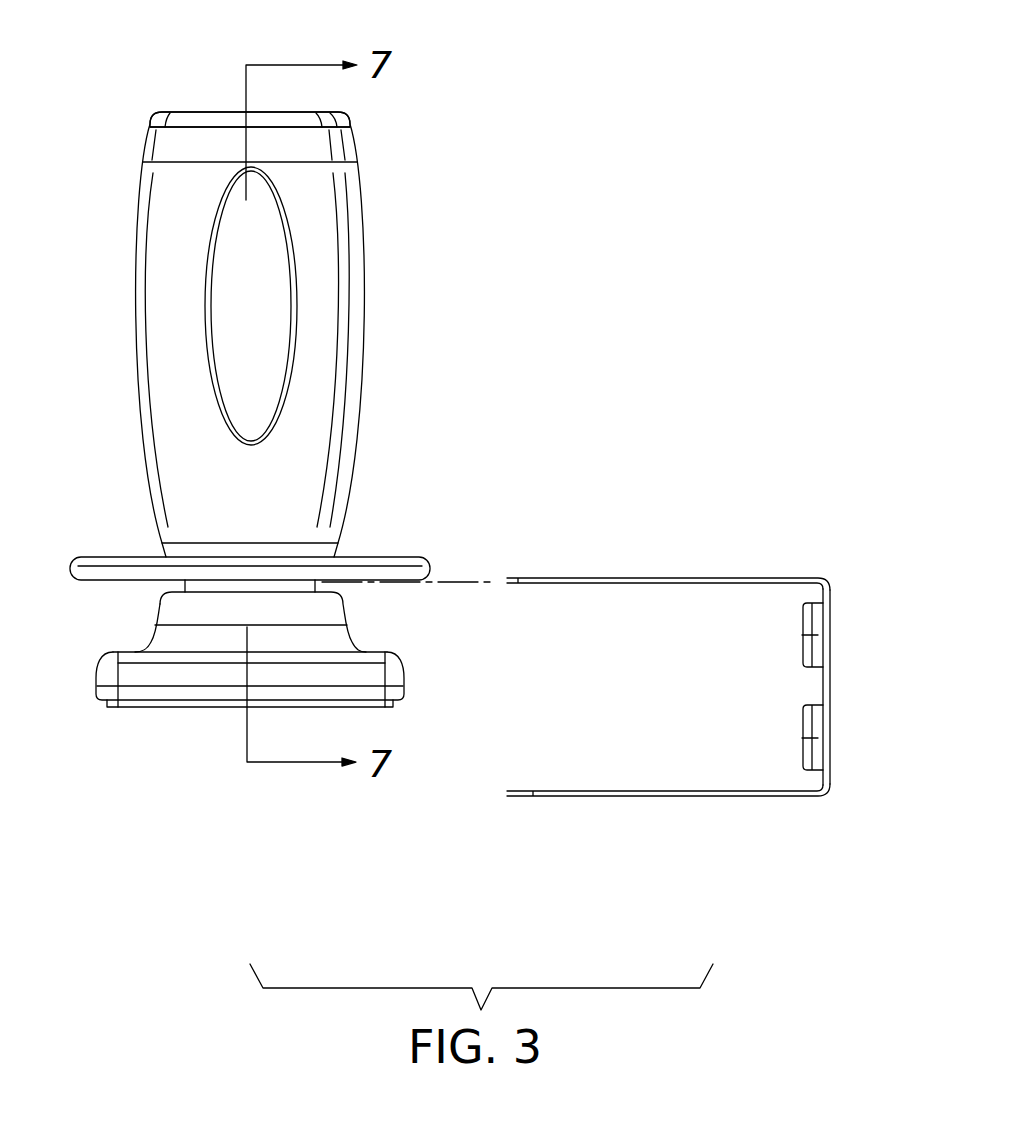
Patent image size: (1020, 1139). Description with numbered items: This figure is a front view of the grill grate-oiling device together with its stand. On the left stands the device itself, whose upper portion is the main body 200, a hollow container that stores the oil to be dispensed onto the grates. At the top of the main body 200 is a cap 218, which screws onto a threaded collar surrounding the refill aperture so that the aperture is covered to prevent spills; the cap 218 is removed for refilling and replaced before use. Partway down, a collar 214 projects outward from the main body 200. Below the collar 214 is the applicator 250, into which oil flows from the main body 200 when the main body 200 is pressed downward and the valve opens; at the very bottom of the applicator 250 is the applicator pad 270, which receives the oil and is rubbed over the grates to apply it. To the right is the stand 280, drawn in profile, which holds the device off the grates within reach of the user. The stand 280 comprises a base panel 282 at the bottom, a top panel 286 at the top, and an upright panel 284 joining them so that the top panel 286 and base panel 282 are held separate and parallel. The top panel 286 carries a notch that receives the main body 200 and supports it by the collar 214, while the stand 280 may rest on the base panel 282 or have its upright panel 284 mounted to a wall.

The main body 200 is at (158, 332).
The collar 214 is at (82, 557).
The cap 218 is at (170, 113).
The applicator 250 is at (97, 684).
The applicator pad 270 is at (143, 707).
The stand 280 is at (714, 695).
The base panel 282 is at (703, 795).
The upright panel 284 is at (820, 690).
The top panel 286 is at (716, 578).